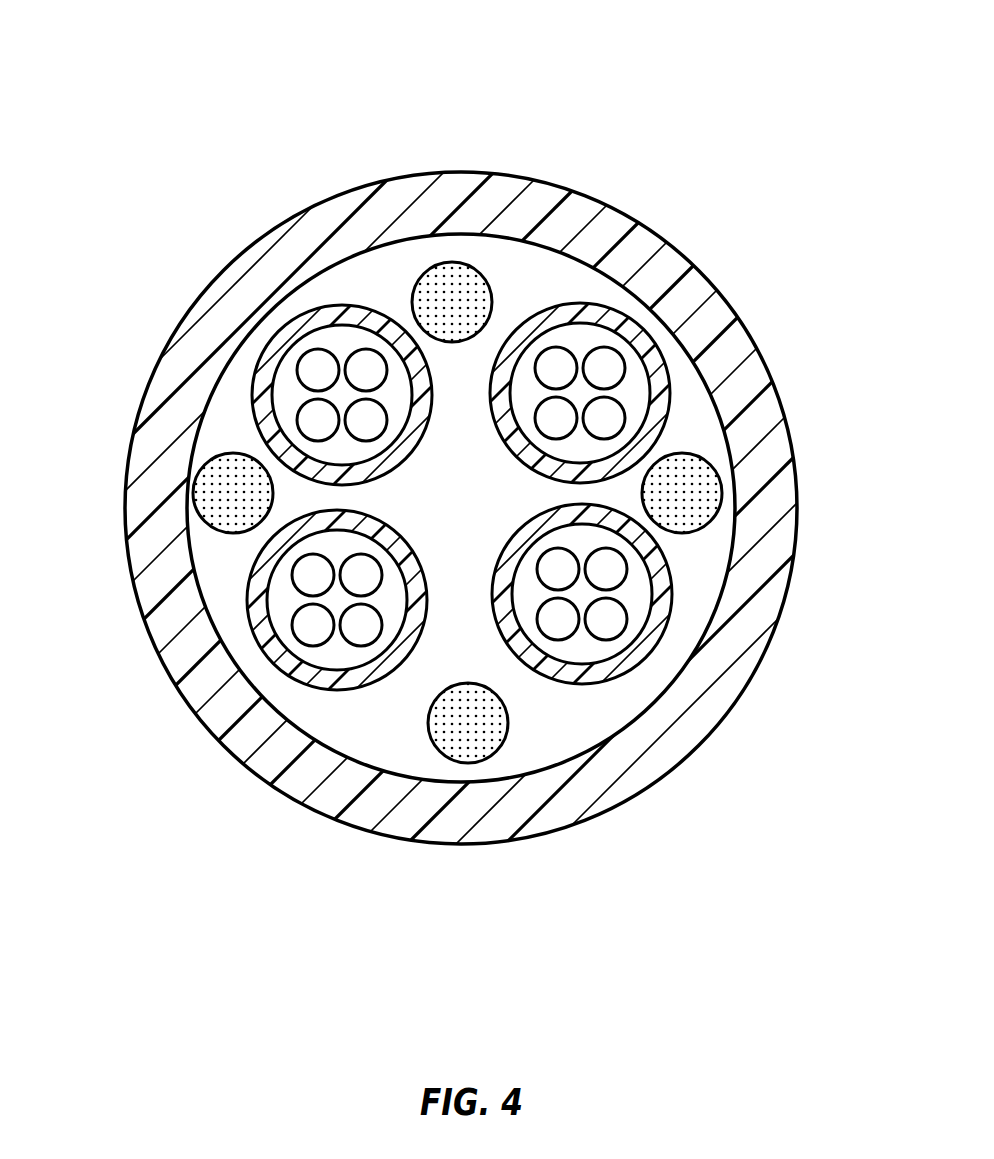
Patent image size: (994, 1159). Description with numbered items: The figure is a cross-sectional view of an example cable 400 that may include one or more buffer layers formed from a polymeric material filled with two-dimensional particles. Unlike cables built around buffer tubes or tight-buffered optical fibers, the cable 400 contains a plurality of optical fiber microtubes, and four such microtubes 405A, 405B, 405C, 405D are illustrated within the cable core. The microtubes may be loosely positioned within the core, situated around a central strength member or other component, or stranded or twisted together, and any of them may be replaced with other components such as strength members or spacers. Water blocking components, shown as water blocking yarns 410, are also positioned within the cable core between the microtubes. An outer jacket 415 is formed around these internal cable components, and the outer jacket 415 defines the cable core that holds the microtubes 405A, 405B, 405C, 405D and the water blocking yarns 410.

The cable 400 is at (232, 878).
The microtube 405A is at (317, 307).
The microtube 405B is at (665, 368).
The microtube 405C is at (662, 638).
The microtube 405D is at (245, 602).
The water blocking yarns 410 is at (450, 297).
The outer jacket 415 is at (497, 212).